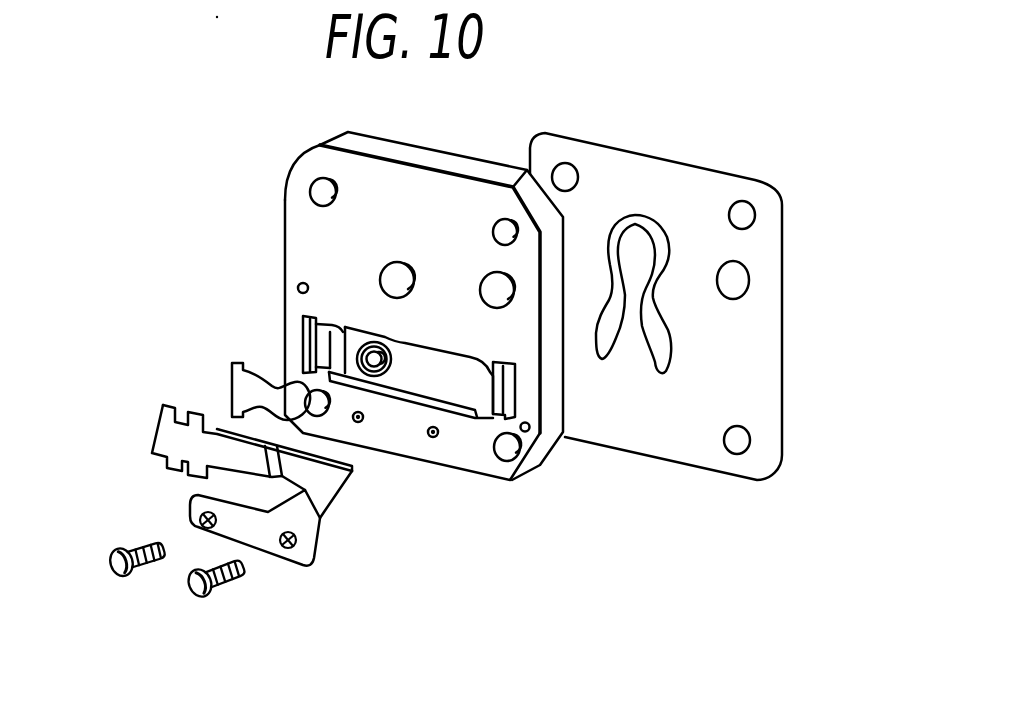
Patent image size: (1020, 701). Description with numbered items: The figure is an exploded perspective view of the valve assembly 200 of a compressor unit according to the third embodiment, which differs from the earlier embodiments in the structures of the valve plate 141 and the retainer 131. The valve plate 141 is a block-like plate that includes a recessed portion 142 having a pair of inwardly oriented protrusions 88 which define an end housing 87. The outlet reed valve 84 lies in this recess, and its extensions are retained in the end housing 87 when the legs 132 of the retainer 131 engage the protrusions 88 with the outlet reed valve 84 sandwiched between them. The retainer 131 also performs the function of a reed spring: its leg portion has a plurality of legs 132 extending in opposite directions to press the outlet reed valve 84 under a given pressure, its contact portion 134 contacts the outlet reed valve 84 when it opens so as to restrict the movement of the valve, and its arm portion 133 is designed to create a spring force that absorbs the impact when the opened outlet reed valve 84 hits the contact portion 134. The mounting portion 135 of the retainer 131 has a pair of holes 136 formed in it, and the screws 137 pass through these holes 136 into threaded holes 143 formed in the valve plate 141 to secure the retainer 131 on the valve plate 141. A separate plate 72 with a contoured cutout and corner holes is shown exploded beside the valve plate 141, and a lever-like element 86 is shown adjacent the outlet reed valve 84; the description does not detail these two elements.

The valve assembly 200 is at (501, 536).
The valve plate 141 is at (424, 165).
The mounting plate 72 is at (670, 170).
The protrusions 88 is at (335, 327).
The end housing 87 is at (322, 348).
The outlet reed valve 84 is at (268, 405).
The latch lever 86 is at (234, 368).
The recessed portion 142 is at (477, 390).
The threaded holes 143 is at (362, 424).
The retainer 131 is at (318, 525).
The legs 132 is at (180, 405).
The arm portion 133 is at (313, 472).
The contact portion 134 is at (345, 478).
The mounting portion 135 is at (308, 558).
The holes 136 is at (200, 518).
The screws 137 is at (190, 585).